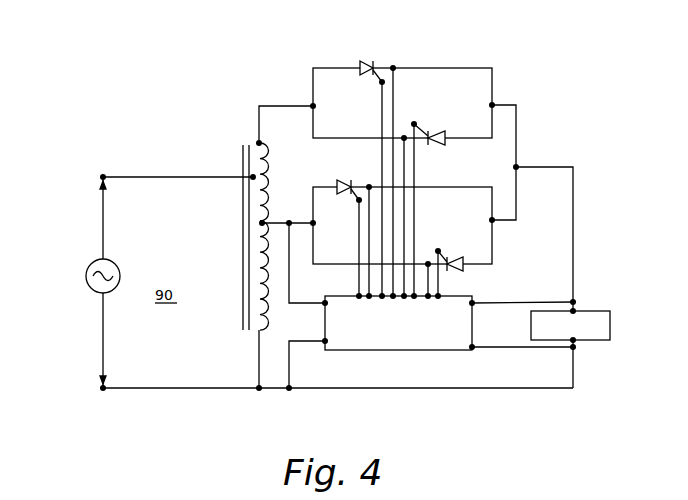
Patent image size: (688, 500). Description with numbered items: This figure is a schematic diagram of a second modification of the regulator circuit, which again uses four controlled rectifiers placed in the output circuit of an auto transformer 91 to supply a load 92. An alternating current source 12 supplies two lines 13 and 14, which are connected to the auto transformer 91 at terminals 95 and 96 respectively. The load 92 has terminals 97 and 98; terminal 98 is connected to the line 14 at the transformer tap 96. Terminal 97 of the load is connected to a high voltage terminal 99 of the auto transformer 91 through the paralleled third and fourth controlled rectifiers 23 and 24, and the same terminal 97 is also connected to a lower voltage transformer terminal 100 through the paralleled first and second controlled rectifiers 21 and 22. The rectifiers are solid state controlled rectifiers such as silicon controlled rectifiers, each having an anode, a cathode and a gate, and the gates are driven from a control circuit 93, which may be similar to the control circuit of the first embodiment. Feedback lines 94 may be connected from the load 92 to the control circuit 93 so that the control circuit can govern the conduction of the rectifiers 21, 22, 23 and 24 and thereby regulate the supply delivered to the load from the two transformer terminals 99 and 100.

The alternating current source 12 is at (117, 265).
The line 13 is at (141, 176).
The line 14 is at (157, 386).
The first controlled rectifier 21 is at (343, 178).
The second controlled rectifier 22 is at (455, 257).
The third controlled rectifier 23 is at (370, 62).
The fourth controlled rectifier 24 is at (437, 130).
The auto transformer 91 is at (241, 318).
The load 92 is at (610, 328).
The control circuit 93 is at (324, 321).
The feedback lines 94 is at (502, 304).
The terminal 95 is at (254, 177).
The terminal 96 is at (259, 392).
The load terminal 97 is at (573, 302).
The load terminal 98 is at (573, 347).
The high voltage terminal 99 is at (259, 141).
The lower voltage transformer terminal 100 is at (263, 222).